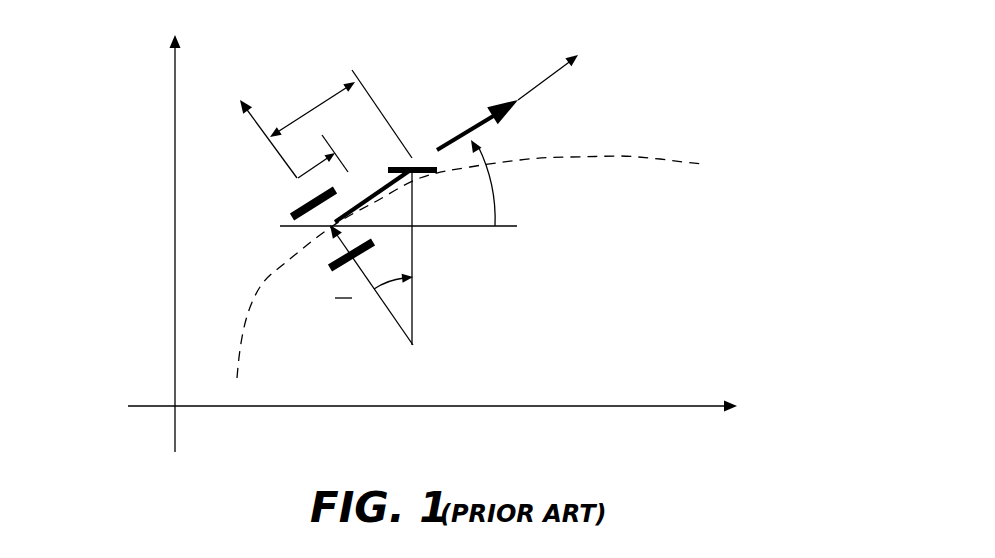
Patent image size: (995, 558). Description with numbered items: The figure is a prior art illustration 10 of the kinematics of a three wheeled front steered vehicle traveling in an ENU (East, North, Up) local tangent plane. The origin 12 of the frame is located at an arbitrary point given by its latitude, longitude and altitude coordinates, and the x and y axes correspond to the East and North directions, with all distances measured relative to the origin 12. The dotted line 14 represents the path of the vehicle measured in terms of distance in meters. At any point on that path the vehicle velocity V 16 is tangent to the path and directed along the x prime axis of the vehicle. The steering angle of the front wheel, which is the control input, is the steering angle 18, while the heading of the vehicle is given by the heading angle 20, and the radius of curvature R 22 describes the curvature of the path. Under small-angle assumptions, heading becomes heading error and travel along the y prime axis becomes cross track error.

The prior art illustration 10 is at (106, 375).
The origin 12 is at (175, 407).
The dotted line 14 is at (577, 157).
The vehicle velocity V 16 is at (462, 118).
The steering angle θ 18 is at (403, 288).
The heading angle ψ 20 is at (475, 212).
The radius of curvature R 22 is at (376, 317).